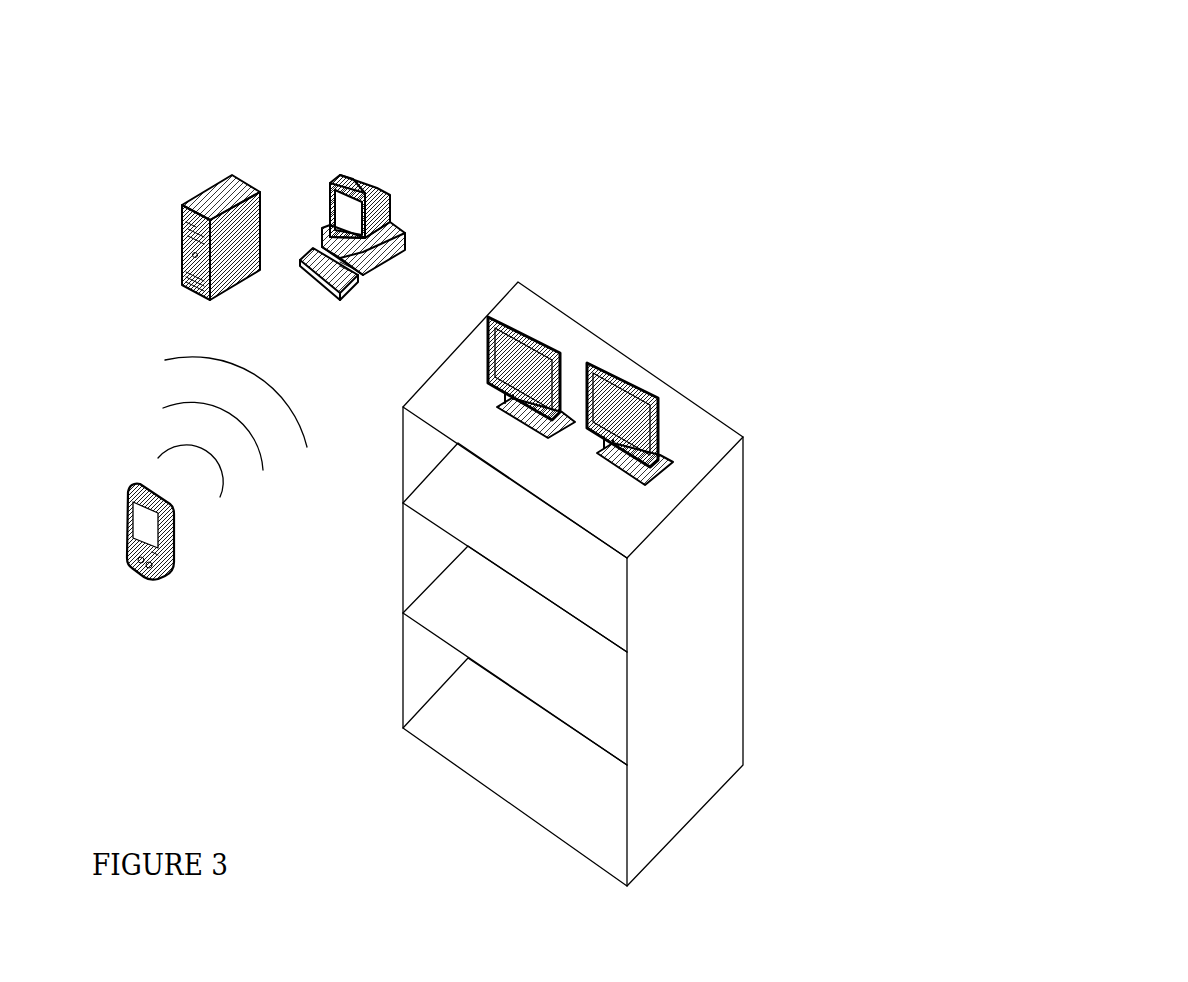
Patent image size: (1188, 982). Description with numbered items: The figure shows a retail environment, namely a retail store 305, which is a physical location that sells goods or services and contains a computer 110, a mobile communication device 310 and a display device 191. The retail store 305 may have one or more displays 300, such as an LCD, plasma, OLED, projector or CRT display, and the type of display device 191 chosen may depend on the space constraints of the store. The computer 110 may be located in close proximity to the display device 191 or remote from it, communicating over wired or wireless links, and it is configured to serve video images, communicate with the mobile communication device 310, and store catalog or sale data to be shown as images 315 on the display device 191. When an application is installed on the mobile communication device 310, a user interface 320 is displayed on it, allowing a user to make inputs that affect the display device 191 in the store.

The computer 110 is at (336, 178).
The display device 191 is at (608, 362).
The display 300 is at (465, 136).
The retail store 305 is at (1010, 147).
The mobile communication device 310 is at (135, 482).
The images 315 is at (532, 377).
The user interface 320 is at (152, 532).